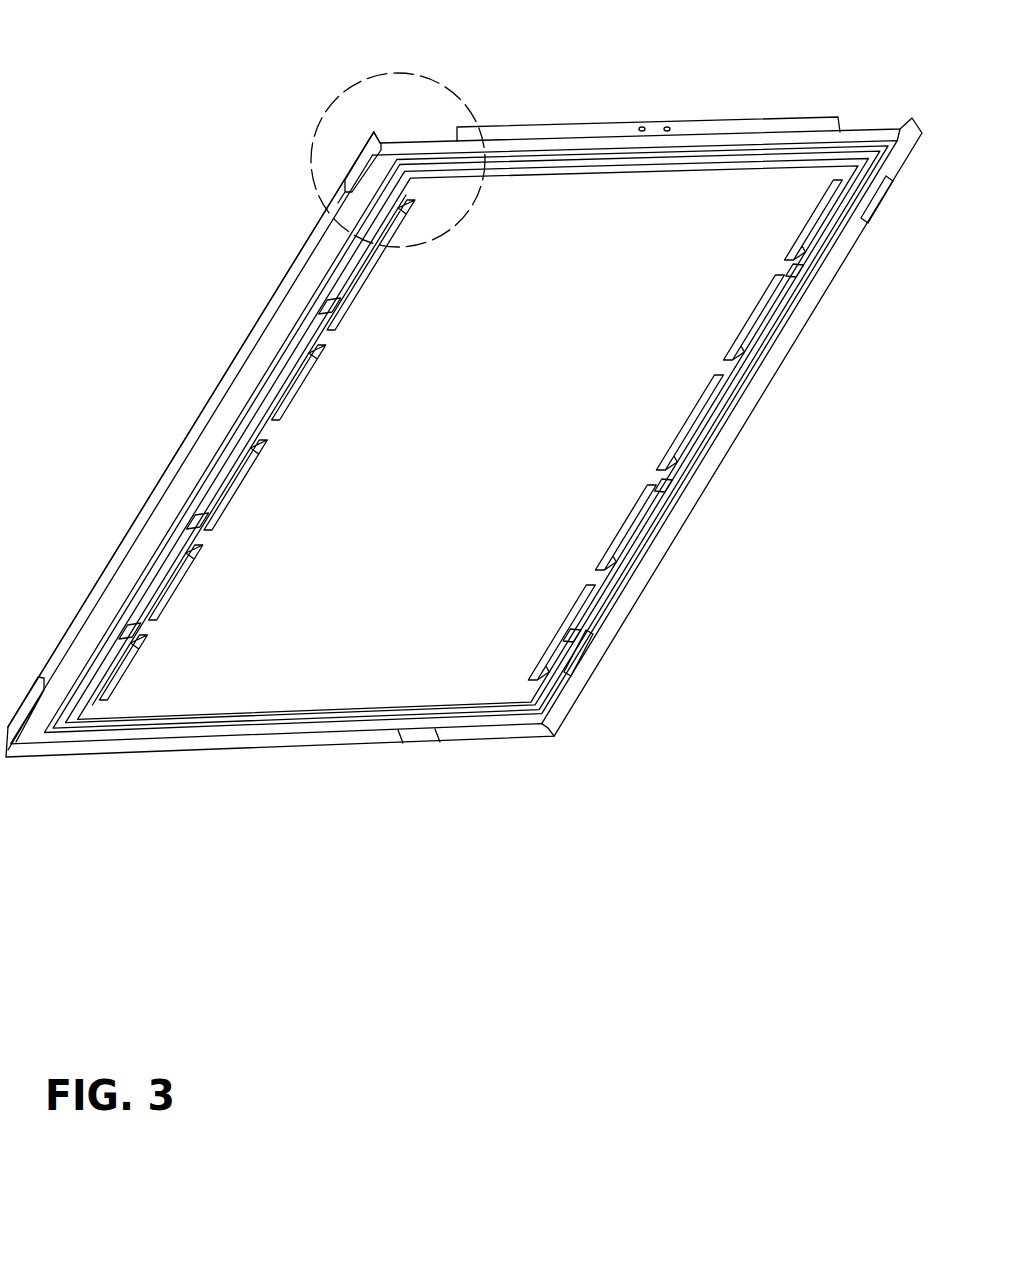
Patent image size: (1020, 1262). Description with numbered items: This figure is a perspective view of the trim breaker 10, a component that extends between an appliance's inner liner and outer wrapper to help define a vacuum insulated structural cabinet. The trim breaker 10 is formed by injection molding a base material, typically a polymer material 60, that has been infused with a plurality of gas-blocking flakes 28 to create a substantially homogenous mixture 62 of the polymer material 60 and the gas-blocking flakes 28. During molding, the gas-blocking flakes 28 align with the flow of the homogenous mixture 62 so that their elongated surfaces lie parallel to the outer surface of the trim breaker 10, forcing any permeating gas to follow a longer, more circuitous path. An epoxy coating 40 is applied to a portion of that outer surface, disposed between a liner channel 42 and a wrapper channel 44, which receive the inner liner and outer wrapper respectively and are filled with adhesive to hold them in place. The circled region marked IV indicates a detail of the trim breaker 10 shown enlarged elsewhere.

The trim breaker 10 is at (464, 459).
The gas-blocking flakes 28 is at (241, 346).
The epoxy coating 40 is at (745, 385).
The liner channel 42 is at (818, 153).
The wrapper channel 44 is at (872, 201).
The polymer material 60 is at (76, 740).
The homogenous mixture 62 is at (184, 421).
The detail view IV is at (432, 82).